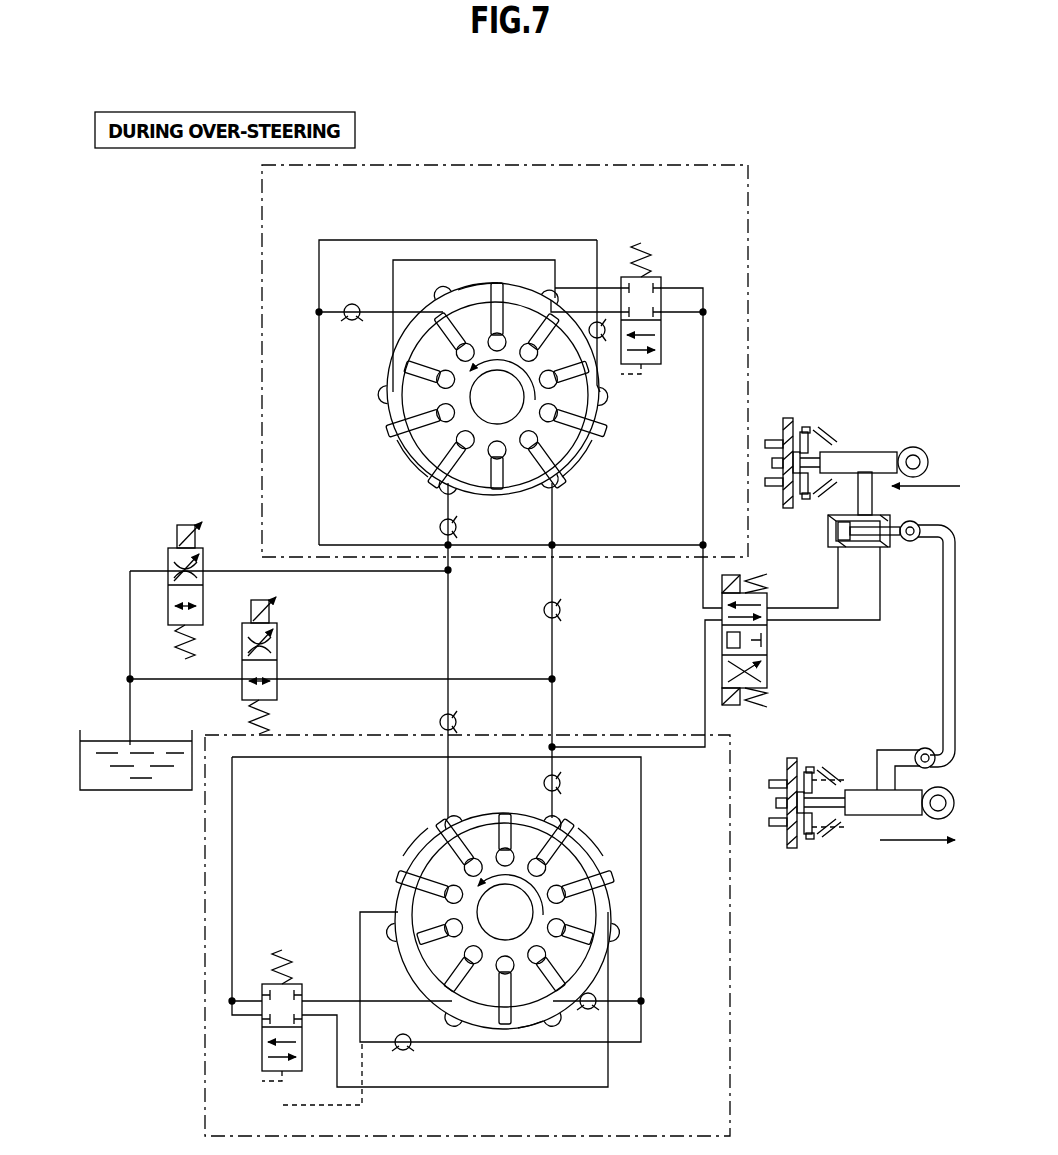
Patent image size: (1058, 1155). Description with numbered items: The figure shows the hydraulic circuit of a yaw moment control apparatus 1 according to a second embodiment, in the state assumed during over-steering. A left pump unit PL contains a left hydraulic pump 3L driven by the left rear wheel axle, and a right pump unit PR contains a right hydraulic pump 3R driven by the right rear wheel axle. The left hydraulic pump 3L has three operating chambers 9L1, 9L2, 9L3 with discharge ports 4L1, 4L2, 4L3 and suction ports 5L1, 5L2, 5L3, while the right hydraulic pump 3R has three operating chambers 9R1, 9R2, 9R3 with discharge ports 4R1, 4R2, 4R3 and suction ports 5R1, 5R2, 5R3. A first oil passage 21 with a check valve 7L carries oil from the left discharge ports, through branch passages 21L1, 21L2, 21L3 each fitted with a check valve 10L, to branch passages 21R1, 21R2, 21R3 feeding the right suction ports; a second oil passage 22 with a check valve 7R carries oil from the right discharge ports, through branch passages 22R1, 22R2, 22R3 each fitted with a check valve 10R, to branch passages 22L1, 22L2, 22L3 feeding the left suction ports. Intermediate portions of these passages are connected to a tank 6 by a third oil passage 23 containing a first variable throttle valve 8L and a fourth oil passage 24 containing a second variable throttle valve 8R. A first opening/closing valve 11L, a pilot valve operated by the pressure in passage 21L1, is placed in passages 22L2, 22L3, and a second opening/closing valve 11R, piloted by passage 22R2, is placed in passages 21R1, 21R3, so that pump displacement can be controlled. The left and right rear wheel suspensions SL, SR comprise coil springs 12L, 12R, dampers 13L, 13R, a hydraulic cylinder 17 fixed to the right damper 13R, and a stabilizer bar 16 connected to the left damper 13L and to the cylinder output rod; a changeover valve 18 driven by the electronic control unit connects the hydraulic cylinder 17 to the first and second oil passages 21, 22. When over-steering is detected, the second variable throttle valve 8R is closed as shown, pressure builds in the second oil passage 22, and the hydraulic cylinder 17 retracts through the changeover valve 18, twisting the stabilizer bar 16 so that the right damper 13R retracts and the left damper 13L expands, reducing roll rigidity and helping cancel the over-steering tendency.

The yaw moment control apparatus 1 is at (176, 870).
The right hydraulic pump 3R is at (298, 404).
The left hydraulic pump 3L is at (661, 845).
The discharge port 4R1 is at (450, 488).
The discharge port 4R2 is at (607, 394).
The discharge port 4R3 is at (440, 297).
The suction port 5R1 is at (390, 394).
The suction port 5R2 is at (549, 488).
The suction port 5R3 is at (547, 296).
The discharge port 4L1 is at (399, 917).
The discharge port 4L2 is at (556, 1010).
The discharge port 4L3 is at (551, 818).
The suction port 5L1 is at (460, 818).
The suction port 5L2 is at (455, 1010).
The suction port 5L3 is at (612, 911).
The tank 6 is at (138, 792).
The check valve 7R is at (460, 722).
The check valve 7L is at (545, 610).
The second variable throttle valve 8R is at (163, 545).
The first variable throttle valve 8L is at (238, 690).
The operating chamber 9R1 is at (413, 462).
The operating chamber 9R2 is at (590, 462).
The operating chamber 9R3 is at (466, 285).
The operating chamber 9L1 is at (416, 848).
The operating chamber 9L2 is at (531, 1022).
The operating chamber 9L3 is at (594, 850).
The check valve 10R is at (356, 321).
The check valve 10L is at (548, 776).
The second opening/closing valve 11R is at (663, 250).
The first opening/closing valve 11L is at (259, 1050).
The coil spring 12R is at (802, 430).
The coil spring 12L is at (820, 838).
The right damper 13R is at (880, 452).
The left damper 13L is at (872, 790).
The stabilizer bar 16 is at (945, 640).
The hydraulic cylinder 17 is at (828, 532).
The changeover valve 18 is at (770, 648).
The first oil passage 21 is at (550, 660).
The second oil passage 22 is at (452, 628).
The third oil passage 23 is at (320, 682).
The fourth oil passage 24 is at (318, 574).
The oil passage 21R1 is at (683, 290).
The oil passage 21R2 is at (559, 525).
The oil passage 21R3 is at (707, 322).
The oil passage 22R1 is at (440, 524).
The oil passage 22R2 is at (598, 258).
The oil passage 22R3 is at (358, 304).
The oil passage 21L1 is at (360, 912).
The oil passage 21L2 is at (626, 1005).
The oil passage 21L3 is at (560, 800).
The oil passage 22L1 is at (450, 800).
The oil passage 22L2 is at (335, 1000).
The oil passage 22L3 is at (392, 1088).
The right pump unit PR is at (257, 306).
The left pump unit PL is at (582, 727).
The right rear wheel suspension SR is at (856, 418).
The left rear wheel suspension SL is at (866, 868).